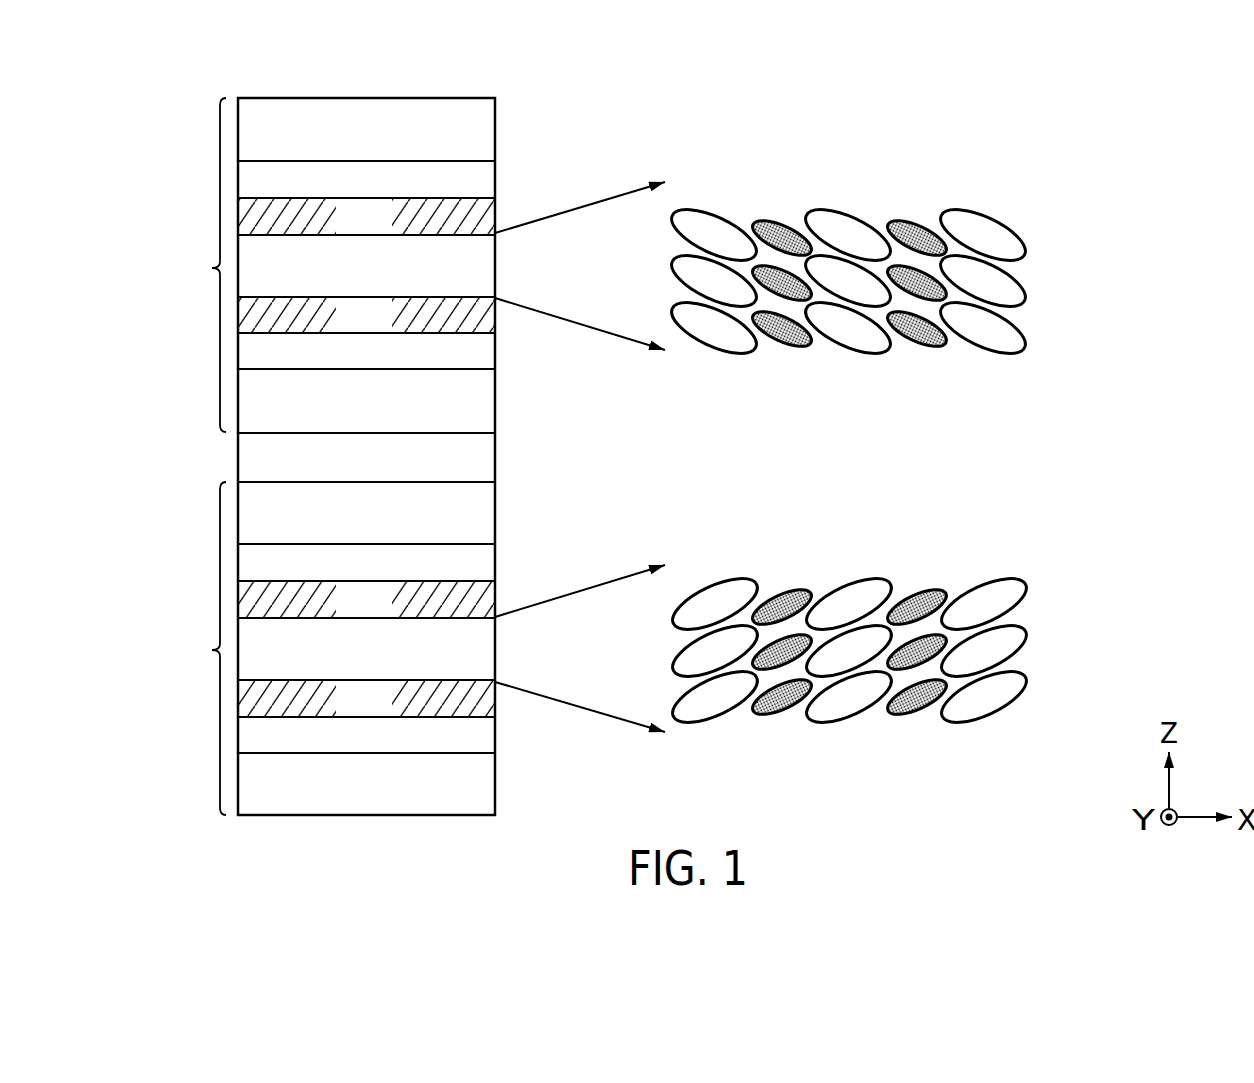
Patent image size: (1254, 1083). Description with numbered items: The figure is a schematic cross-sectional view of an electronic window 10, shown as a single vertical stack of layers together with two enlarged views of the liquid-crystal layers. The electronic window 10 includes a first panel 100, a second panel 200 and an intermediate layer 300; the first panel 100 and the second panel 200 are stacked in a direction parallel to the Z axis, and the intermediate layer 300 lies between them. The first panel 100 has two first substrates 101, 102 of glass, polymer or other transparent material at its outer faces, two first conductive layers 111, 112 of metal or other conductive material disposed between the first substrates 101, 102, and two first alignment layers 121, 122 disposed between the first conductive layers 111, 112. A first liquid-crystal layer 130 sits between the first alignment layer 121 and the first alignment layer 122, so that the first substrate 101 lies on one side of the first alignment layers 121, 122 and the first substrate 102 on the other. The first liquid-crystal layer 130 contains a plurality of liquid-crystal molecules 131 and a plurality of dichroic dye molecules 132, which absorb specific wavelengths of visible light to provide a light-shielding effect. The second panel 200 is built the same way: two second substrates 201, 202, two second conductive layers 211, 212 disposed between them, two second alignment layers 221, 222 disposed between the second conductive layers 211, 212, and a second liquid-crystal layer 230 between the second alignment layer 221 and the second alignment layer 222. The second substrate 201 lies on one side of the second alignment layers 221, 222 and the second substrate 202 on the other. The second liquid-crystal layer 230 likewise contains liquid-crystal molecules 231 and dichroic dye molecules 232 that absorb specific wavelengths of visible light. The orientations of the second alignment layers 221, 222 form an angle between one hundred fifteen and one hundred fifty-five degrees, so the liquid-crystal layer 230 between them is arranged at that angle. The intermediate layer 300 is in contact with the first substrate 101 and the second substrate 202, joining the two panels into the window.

The electronic window 10 is at (115, 92).
The first panel 100 is at (194, 265).
The first substrate 101 is at (392, 417).
The first substrate 102 is at (392, 147).
The first conductive layer 111 is at (392, 366).
The first conductive layer 112 is at (392, 194).
The first alignment layer 121 is at (392, 330).
The first alignment layer 122 is at (392, 230).
The first liquid-crystal layer 130 is at (392, 282).
The liquid-crystal molecules 131 is at (720, 228).
The dichroic dye molecules 132 is at (781, 230).
The second panel 200 is at (194, 648).
The second substrate 201 is at (392, 799).
The second substrate 202 is at (392, 529).
The second conductive layer 211 is at (392, 748).
The second conductive layer 212 is at (392, 577).
The second alignment layer 221 is at (392, 713).
The second alignment layer 222 is at (392, 613).
The second liquid-crystal layer 230 is at (392, 665).
The liquid-crystal molecules 231 is at (716, 706).
The dichroic dye molecules 232 is at (786, 706).
The intermediate layer 300 is at (392, 473).